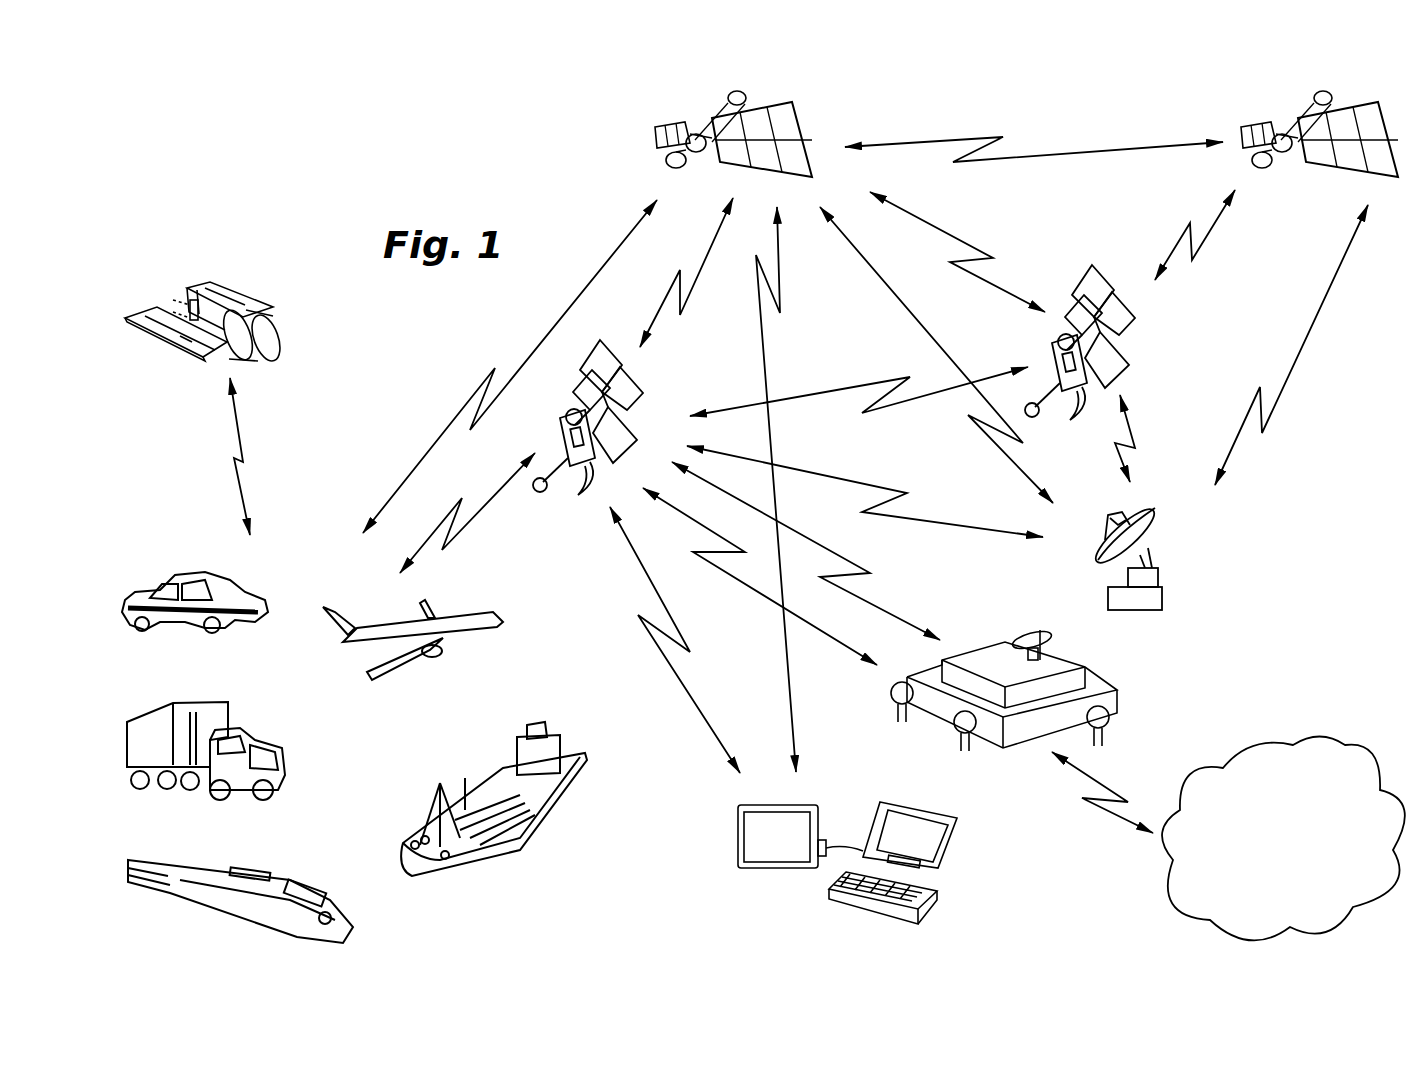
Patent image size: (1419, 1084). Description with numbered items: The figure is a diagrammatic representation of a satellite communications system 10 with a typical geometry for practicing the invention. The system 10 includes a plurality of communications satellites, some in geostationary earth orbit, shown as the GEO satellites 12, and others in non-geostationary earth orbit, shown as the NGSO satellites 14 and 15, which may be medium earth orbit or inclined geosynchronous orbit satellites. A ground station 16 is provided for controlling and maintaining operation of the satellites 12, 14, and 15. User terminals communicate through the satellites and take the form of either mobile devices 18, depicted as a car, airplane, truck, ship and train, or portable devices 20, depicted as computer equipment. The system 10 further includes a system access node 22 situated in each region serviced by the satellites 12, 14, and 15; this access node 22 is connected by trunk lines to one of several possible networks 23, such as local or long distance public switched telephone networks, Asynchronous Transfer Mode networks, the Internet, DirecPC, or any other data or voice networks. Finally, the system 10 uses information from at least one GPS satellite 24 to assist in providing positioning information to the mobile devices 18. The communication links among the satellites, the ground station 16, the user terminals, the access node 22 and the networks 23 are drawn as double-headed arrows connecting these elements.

The communications system 10 is at (566, 131).
The geostationary earth orbit (GEO) satellite 12 is at (762, 108).
The non-geostationary earth orbit (NGSO) satellite 14 is at (914, 380).
The non-geostationary earth orbit (NGSO) satellite 15 is at (633, 432).
The ground station 16 is at (1160, 577).
The mobile devices 18 is at (192, 577).
The portable devices 20 is at (735, 830).
The system access node 22 is at (1105, 680).
The networks 23 is at (1318, 748).
The GPS satellite 24 is at (230, 295).